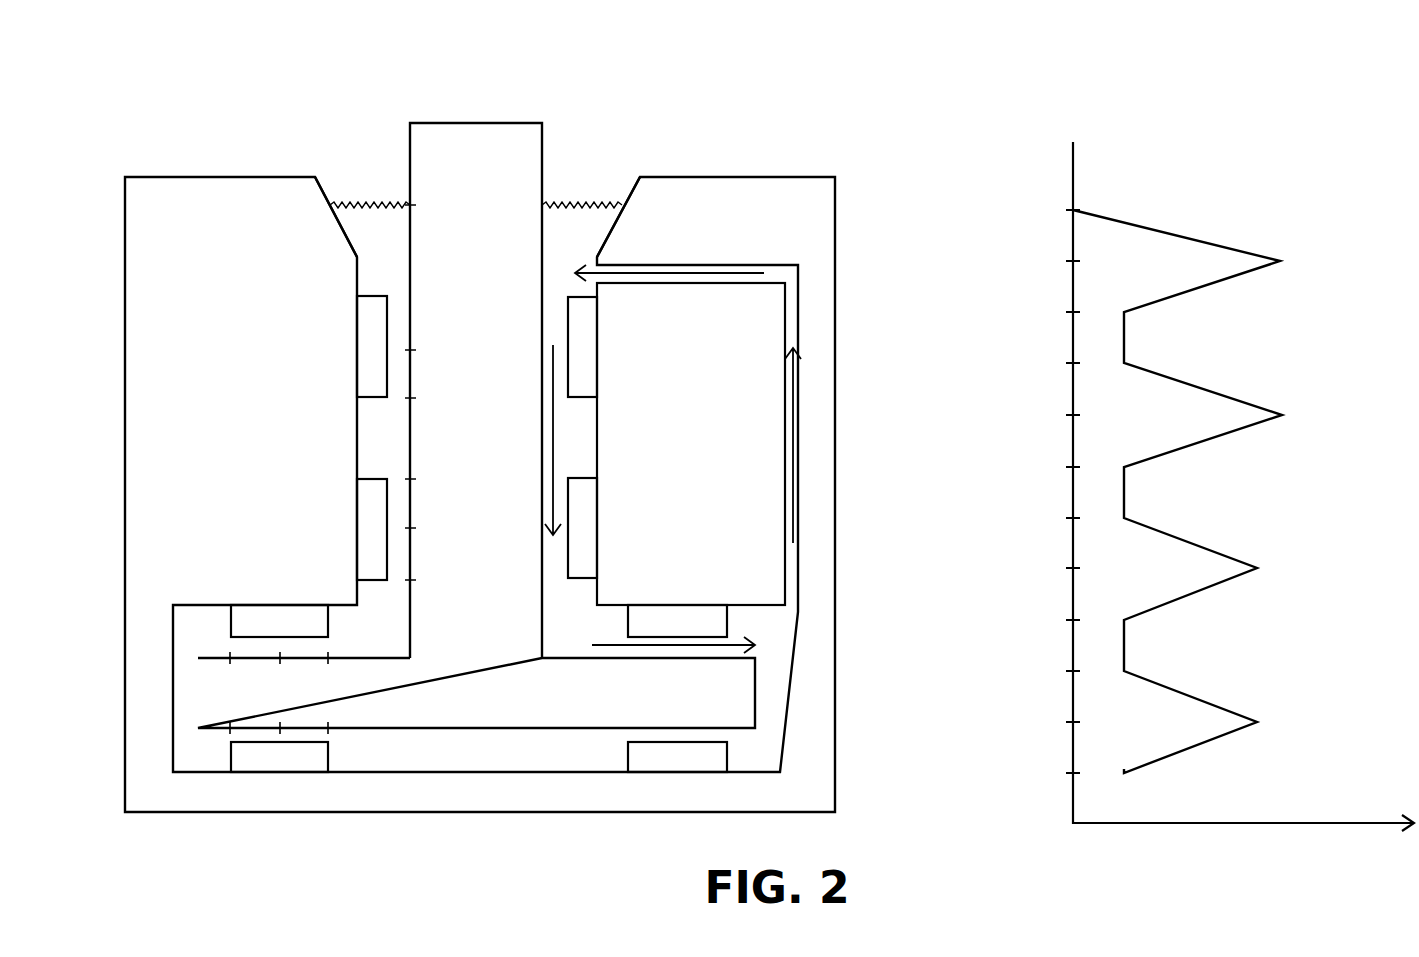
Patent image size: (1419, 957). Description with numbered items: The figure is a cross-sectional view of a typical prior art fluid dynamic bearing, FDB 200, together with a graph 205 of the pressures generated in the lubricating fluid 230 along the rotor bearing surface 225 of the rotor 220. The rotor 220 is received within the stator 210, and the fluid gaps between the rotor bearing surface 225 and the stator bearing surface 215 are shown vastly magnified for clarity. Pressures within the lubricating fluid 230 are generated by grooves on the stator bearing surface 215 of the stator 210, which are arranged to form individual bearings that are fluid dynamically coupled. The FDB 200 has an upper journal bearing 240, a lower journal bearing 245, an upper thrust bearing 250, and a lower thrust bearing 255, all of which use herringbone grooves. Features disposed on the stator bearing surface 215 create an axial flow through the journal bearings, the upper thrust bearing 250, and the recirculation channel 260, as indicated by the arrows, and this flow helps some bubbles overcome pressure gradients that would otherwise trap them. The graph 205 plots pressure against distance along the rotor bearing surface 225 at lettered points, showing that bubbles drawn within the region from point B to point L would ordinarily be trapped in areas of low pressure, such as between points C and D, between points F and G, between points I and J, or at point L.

The fluid dynamic bearing 200 is at (455, 61).
The graph 205 is at (1130, 63).
The stator 210 is at (232, 216).
The stator bearing surface 215 is at (327, 192).
The rotor 220 is at (477, 160).
The rotor bearing surface 225 is at (407, 152).
The lubricating fluid 230 is at (567, 230).
The upper journal bearing 240 is at (378, 350).
The lower journal bearing 245 is at (372, 540).
The upper thrust bearing 250 is at (271, 620).
The lower thrust bearing 255 is at (287, 755).
The recirculation channel 260 is at (793, 282).